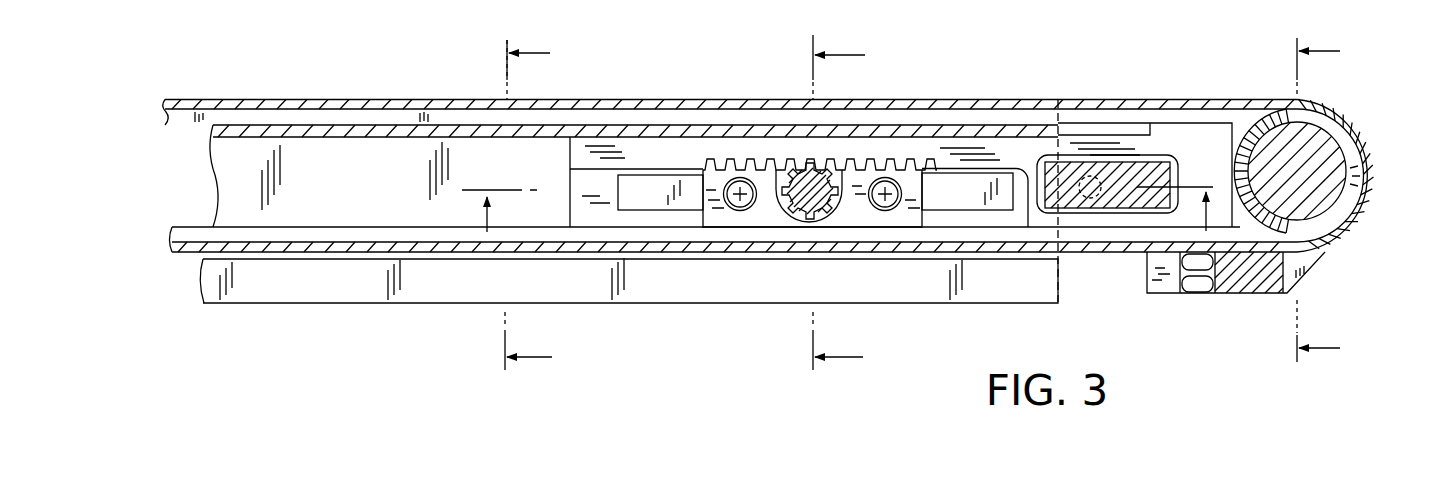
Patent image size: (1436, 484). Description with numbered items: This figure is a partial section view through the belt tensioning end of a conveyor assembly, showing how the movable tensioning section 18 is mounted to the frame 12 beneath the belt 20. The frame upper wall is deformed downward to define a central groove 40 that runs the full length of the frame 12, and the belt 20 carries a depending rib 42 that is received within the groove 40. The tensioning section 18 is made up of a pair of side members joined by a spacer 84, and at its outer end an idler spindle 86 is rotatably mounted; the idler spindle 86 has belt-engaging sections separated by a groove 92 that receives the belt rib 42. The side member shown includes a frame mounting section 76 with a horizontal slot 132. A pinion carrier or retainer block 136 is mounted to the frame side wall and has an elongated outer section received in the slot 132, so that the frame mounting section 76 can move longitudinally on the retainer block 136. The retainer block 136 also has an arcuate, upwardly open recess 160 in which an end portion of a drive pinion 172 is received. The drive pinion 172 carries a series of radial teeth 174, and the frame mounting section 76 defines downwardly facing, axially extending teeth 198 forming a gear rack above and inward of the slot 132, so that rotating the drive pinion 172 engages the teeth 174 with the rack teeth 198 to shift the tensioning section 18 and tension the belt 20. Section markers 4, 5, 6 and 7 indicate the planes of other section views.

The frame 12 is at (198, 290).
The tensioning section 18 is at (1171, 69).
The belt 20 is at (373, 97).
The central groove 40 is at (372, 120).
The depending rib 42 is at (190, 120).
The frame mounting section 76 is at (553, 161).
The spacer 84 is at (1122, 193).
The idler spindle 86 is at (1237, 127).
The groove 92 is at (1255, 132).
The horizontal slot 132 is at (645, 185).
The retainer block 136 is at (931, 194).
The arcuate recess 160 is at (838, 168).
The drive pinion 172 is at (784, 211).
The radial teeth 174 is at (812, 219).
The teeth 198 is at (937, 170).
The section line 4- 4 is at (518, 205).
The section line 5- 5 is at (1310, 200).
The section line 6- 6 is at (828, 202).
The section line 7- 7 is at (838, 196).